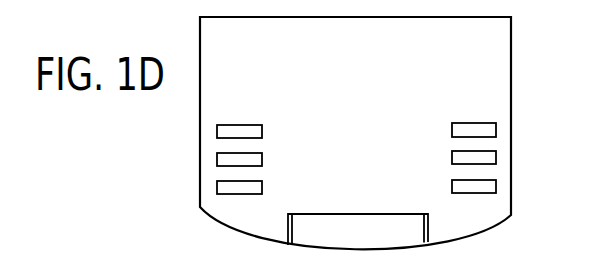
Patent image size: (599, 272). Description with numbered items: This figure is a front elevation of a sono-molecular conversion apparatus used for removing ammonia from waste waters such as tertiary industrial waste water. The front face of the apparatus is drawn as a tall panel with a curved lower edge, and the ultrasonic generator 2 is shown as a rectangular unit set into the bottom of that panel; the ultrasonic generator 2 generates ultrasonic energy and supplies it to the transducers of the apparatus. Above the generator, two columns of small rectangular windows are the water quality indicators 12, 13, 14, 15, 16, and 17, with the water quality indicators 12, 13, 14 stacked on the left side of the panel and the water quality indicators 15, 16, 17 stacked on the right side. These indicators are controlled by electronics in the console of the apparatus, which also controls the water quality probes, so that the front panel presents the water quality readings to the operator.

The ultrasonic generator 2 is at (358, 229).
The water quality indicator 12 is at (253, 131).
The water quality indicator 13 is at (253, 159).
The water quality indicator 14 is at (253, 187).
The water quality indicator 15 is at (459, 131).
The water quality indicator 16 is at (459, 159).
The water quality indicator 17 is at (459, 187).